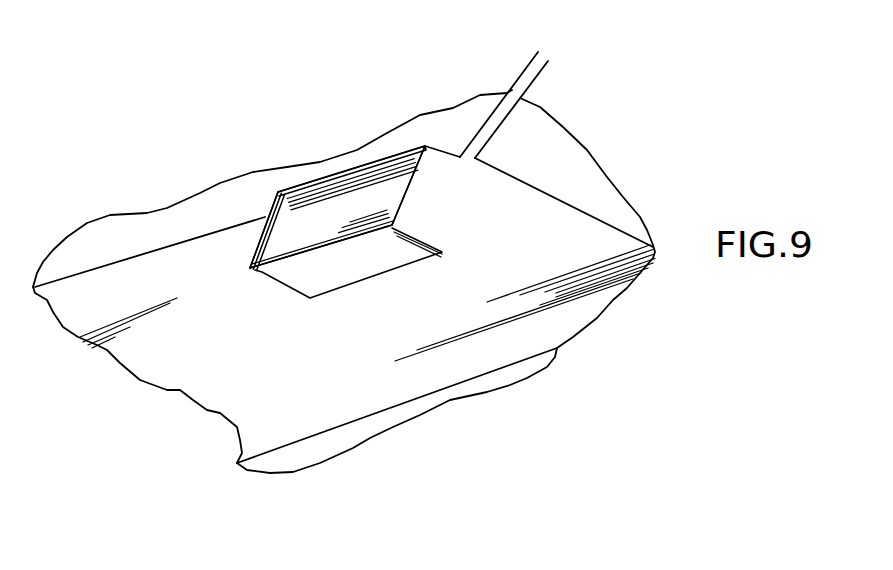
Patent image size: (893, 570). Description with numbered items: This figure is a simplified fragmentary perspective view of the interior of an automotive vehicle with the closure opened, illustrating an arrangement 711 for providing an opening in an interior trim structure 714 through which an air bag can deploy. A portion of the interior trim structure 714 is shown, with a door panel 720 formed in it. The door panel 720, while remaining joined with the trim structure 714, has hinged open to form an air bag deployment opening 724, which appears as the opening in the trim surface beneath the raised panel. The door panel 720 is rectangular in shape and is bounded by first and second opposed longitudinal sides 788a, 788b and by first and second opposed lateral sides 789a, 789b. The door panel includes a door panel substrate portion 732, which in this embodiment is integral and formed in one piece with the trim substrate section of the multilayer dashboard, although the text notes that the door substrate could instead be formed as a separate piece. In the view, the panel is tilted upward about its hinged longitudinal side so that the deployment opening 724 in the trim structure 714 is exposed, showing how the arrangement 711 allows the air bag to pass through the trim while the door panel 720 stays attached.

The arrangement 711 is at (233, 165).
The interior trim structure 714 is at (595, 282).
The door panel 720 is at (348, 203).
The air bag deployment opening 724 is at (350, 270).
The door panel substrate portion 732 is at (302, 213).
The first longitudinal side 788a is at (287, 267).
The second longitudinal side 788b is at (388, 158).
The first lateral side 789a is at (257, 242).
The second lateral side 789b is at (414, 185).